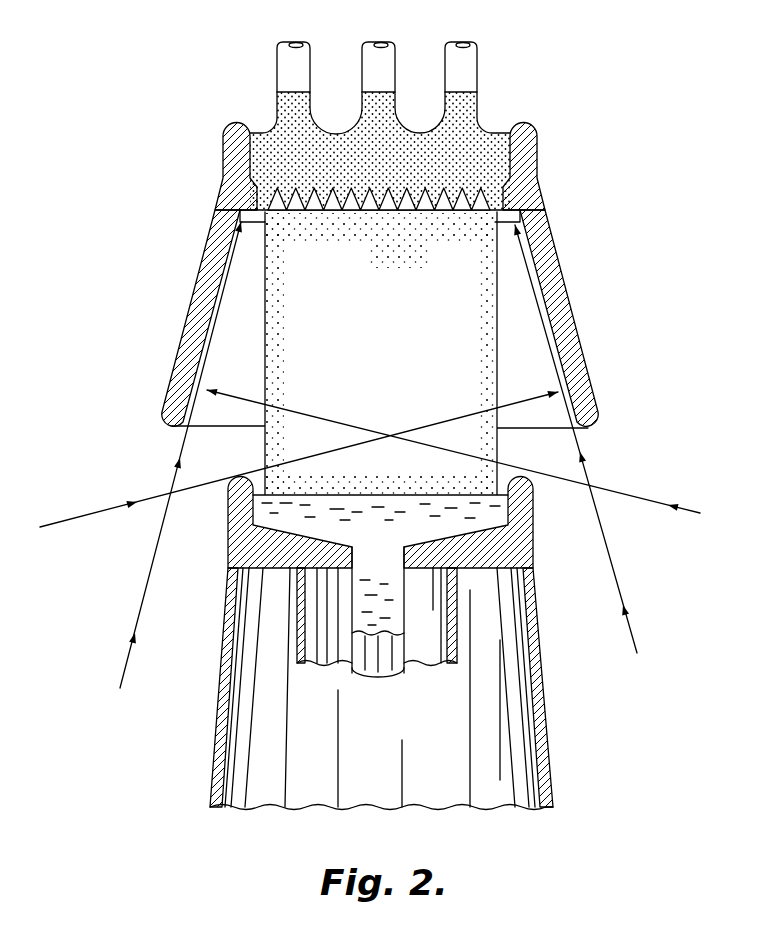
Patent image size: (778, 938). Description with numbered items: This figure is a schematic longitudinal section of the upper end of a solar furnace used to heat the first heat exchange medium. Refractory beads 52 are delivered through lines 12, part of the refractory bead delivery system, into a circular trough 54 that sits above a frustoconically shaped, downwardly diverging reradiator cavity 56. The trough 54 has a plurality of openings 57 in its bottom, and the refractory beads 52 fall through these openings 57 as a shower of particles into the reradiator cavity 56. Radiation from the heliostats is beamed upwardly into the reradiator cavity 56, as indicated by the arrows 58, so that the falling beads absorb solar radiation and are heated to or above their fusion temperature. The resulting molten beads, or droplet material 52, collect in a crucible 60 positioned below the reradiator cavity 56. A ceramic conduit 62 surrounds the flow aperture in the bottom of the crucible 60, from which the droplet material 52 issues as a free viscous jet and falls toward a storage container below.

The lines 12 is at (362, 58).
The refractory beads 52 is at (468, 107).
The circular trough 54 is at (525, 146).
The reradiator cavity 56 is at (560, 298).
The openings 57 is at (262, 218).
The arrows 58 is at (175, 480).
The crucible 60 is at (522, 550).
The ceramic conduit 62 is at (292, 632).